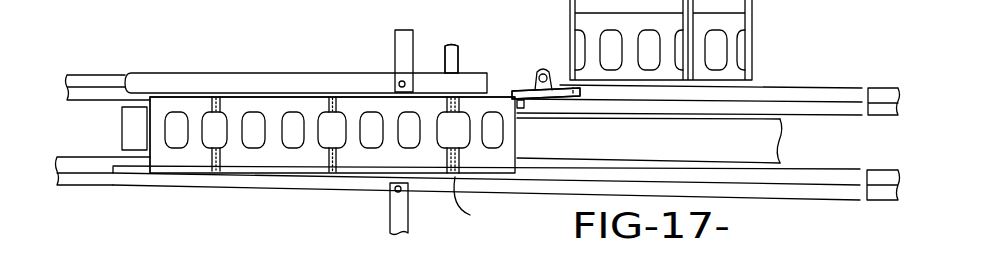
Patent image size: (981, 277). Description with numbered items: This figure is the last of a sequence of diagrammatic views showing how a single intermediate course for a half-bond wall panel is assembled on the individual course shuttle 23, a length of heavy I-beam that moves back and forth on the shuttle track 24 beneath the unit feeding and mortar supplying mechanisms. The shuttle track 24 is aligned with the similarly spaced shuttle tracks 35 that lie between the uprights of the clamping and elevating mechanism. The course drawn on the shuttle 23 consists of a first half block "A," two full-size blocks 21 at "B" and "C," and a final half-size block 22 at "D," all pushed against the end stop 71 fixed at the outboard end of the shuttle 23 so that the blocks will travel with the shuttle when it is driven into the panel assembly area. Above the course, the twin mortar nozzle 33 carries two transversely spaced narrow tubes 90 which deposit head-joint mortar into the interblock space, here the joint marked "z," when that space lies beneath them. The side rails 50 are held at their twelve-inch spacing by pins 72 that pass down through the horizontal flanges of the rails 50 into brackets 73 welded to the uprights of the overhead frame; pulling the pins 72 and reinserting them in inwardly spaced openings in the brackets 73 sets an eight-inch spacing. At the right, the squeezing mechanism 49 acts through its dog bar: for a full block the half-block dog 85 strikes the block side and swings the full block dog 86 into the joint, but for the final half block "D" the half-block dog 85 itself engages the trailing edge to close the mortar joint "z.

The full-size concrete block 21 is at (577, 20).
The half-size concrete block 22 is at (188, 94).
The individual course shuttle 23 is at (697, 152).
The shuttle track 24 is at (76, 166).
The twin mortar nozzle 33 is at (466, 47).
The shuttle tracks 35 is at (877, 170).
The squeezing mechanism 49 is at (526, 69).
The side rails 50 is at (331, 58).
The end stop 71 is at (152, 117).
The pins 72 is at (400, 81).
The brackets 73 is at (395, 43).
The half-block dog 85 is at (522, 106).
The full block dog 86 is at (576, 98).
The tubes 90 is at (459, 60).